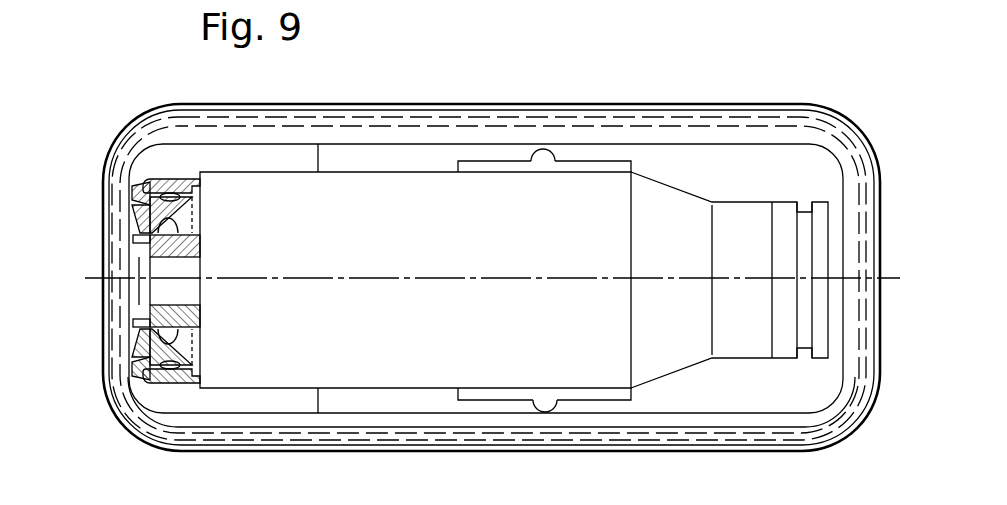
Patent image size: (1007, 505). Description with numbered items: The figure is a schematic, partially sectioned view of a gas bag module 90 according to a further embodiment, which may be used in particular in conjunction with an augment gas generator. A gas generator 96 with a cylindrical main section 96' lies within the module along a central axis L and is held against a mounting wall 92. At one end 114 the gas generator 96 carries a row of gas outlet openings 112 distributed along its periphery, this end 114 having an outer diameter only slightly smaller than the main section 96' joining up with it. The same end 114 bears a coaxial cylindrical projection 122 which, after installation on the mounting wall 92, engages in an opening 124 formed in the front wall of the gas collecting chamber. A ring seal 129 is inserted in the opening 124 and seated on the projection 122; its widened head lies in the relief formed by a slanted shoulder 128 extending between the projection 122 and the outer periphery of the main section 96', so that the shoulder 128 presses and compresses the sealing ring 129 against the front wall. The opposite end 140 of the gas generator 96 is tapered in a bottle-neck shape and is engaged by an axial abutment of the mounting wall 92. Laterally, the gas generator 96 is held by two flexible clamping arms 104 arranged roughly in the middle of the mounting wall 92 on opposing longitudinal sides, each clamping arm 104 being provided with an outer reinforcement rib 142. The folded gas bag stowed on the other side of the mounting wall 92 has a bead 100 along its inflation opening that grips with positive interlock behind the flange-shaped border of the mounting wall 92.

The gas bag module 90 is at (605, 96).
The mounting wall 92 is at (381, 120).
The gas generator 96 is at (415, 327).
The cylindrical main section 96' is at (486, 313).
The bead 100 is at (851, 430).
The clamping arms 104 is at (623, 161).
The gas outlet openings 112 is at (140, 366).
The end 114 is at (163, 166).
The cylindrical projection 122 is at (131, 263).
The opening 124 is at (137, 212).
The slanted shoulder 128 is at (133, 190).
The ring seal 129 is at (133, 340).
The end 140 is at (750, 350).
The outer reinforcement rib 142 is at (544, 150).
The longitudinal axis L is at (888, 278).